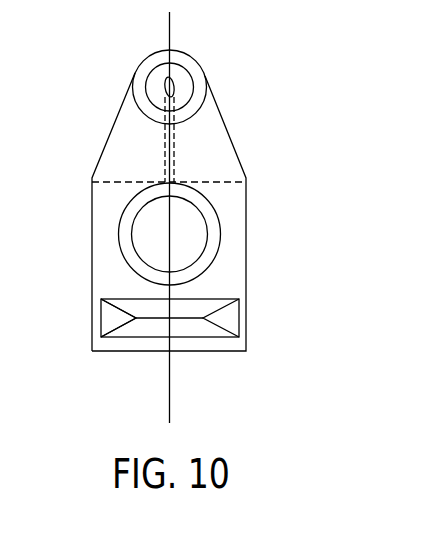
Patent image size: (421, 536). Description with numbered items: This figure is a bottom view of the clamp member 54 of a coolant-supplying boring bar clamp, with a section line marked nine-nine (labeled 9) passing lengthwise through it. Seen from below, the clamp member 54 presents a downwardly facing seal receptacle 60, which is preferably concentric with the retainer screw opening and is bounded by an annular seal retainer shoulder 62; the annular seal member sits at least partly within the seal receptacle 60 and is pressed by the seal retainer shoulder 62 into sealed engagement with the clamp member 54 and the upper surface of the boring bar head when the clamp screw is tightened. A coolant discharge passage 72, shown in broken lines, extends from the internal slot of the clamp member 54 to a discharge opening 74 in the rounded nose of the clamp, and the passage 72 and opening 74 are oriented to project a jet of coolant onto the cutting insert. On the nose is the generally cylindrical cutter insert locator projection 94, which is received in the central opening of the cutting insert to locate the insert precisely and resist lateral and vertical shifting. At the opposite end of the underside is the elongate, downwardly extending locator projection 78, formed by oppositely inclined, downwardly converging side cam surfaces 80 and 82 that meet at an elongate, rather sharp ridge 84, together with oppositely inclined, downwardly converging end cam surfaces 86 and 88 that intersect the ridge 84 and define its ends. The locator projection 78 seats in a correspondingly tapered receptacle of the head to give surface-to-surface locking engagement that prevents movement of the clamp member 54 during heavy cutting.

The section line 9- 9 is at (170, 12).
The clamp member 54 is at (246, 265).
The downwardly facing seal receptacle 60 is at (169, 236).
The annular seal retainer shoulder 62 is at (221, 236).
The coolant discharge passage 72 is at (176, 138).
The discharge opening 74 is at (177, 80).
The downwardly extending locator projection 78 is at (225, 305).
The side cam surface 80 is at (147, 307).
The side cam surface 82 is at (143, 334).
The ridge 84 is at (174, 318).
The end cam surface 86 is at (122, 316).
The end cam surface 88 is at (230, 317).
The cutter insert locator projection 94 is at (142, 85).